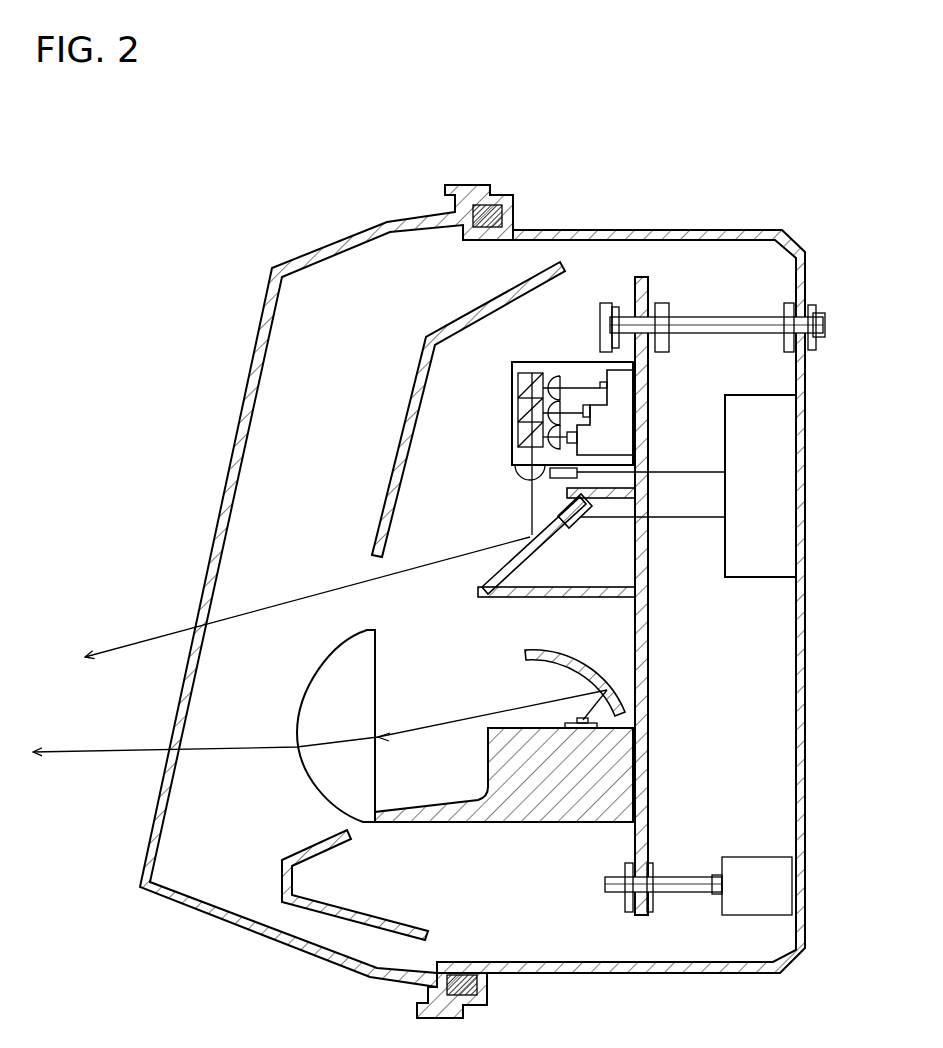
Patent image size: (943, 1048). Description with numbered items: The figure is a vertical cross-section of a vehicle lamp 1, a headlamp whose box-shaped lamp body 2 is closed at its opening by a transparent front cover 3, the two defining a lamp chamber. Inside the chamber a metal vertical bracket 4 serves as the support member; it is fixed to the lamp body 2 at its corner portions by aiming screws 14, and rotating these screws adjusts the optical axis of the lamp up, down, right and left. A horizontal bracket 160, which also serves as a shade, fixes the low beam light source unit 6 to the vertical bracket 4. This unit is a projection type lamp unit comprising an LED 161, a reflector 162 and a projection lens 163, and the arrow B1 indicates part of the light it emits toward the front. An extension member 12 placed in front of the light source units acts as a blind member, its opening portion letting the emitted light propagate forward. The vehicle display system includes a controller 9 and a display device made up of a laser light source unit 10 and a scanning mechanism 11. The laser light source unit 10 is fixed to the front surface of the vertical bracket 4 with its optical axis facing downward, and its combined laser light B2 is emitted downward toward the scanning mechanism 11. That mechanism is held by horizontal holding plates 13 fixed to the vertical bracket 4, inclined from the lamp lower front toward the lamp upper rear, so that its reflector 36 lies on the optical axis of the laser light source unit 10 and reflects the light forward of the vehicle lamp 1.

The vehicle lamp 1 is at (310, 165).
The lamp body 2 is at (570, 967).
The front cover 3 is at (268, 327).
The vertical bracket 4 is at (640, 643).
The low beam light source unit 6 is at (297, 788).
The controller 9 is at (773, 485).
The laser light source unit 10 is at (535, 362).
The scanning mechanism 11 is at (572, 538).
The extension member 12 is at (408, 387).
The horizontal holding plates 13 is at (600, 494).
The aiming screws 14 is at (715, 322).
The reflector 36 is at (533, 537).
The horizontal bracket 160 is at (545, 822).
The LED 161 is at (590, 720).
The reflector 162 is at (590, 662).
The projection lens 163 is at (310, 703).
The arrow B1 is at (88, 752).
The light B2 is at (120, 648).